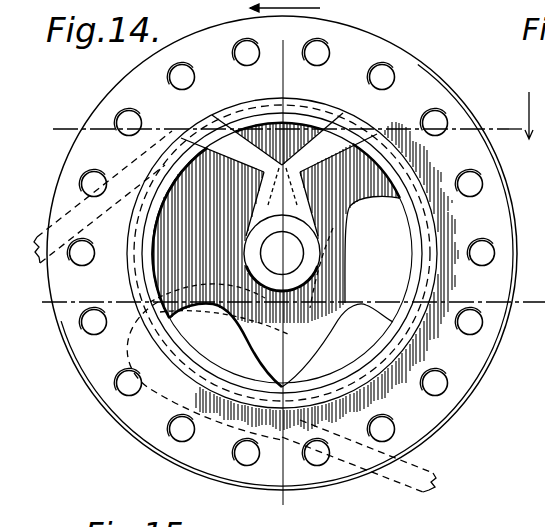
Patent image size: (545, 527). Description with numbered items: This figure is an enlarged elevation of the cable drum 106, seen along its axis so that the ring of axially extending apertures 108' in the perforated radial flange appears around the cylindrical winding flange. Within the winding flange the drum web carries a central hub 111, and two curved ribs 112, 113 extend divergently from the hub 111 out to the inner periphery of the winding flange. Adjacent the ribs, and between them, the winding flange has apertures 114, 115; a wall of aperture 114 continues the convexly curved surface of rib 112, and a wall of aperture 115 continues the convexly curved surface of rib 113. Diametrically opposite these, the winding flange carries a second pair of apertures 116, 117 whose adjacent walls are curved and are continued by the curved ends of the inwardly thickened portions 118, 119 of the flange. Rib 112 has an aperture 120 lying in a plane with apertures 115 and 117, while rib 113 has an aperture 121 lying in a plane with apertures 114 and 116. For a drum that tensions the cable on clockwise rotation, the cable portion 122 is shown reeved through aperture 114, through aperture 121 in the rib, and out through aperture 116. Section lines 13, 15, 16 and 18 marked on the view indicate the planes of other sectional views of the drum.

The drum 106 is at (478, 395).
The axially extending apertures 108' is at (280, 249).
The hub 111 is at (310, 240).
The curved rib 112 is at (223, 143).
The curved rib 113 is at (333, 142).
The aperture 114 is at (252, 122).
The aperture 115 is at (327, 111).
The aperture 116 is at (90, 356).
The aperture 117 is at (437, 336).
The inwardly thickened portion 118 is at (218, 338).
The inwardly thickened portion 119 is at (366, 318).
The aperture 120 is at (263, 199).
The aperture 121 is at (301, 199).
The cable portion 122 is at (427, 470).
The section line 13 is at (535, 116).
The section line 15 is at (281, 124).
The section line 16 is at (291, 315).
The section line 18 is at (285, 265).